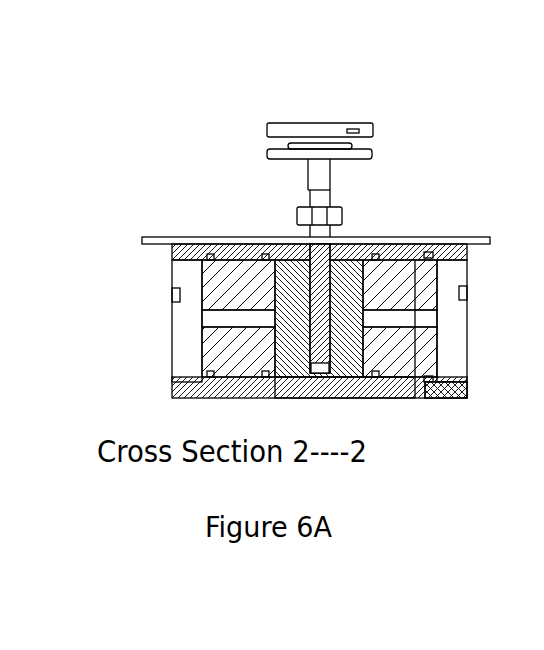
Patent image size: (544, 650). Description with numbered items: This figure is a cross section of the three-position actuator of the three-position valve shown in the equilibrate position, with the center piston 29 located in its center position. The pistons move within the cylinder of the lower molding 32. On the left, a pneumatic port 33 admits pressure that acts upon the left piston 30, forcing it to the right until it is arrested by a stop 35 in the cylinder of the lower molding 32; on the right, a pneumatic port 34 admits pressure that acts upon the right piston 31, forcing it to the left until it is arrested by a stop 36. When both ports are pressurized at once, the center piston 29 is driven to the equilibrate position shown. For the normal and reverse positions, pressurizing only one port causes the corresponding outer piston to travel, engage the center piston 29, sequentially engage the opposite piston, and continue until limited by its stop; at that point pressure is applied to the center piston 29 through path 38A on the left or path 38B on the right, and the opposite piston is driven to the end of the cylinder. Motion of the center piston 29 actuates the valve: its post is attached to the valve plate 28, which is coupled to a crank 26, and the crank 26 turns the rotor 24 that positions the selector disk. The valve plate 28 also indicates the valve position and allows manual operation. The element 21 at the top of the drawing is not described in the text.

The knob plate 21 is at (350, 123).
The rotor 24 is at (320, 176).
The crank 26 is at (295, 208).
The valve plate 28 is at (153, 236).
The center piston 29 is at (372, 237).
The left piston 30 is at (205, 290).
The right piston 31 is at (433, 343).
The lower molding 32 is at (393, 402).
The pneumatic port 33 is at (173, 288).
The pneumatic port 34 is at (468, 290).
The stop 35 is at (178, 400).
The stop 36 is at (442, 398).
The path 38A is at (203, 327).
The path 38B is at (402, 317).